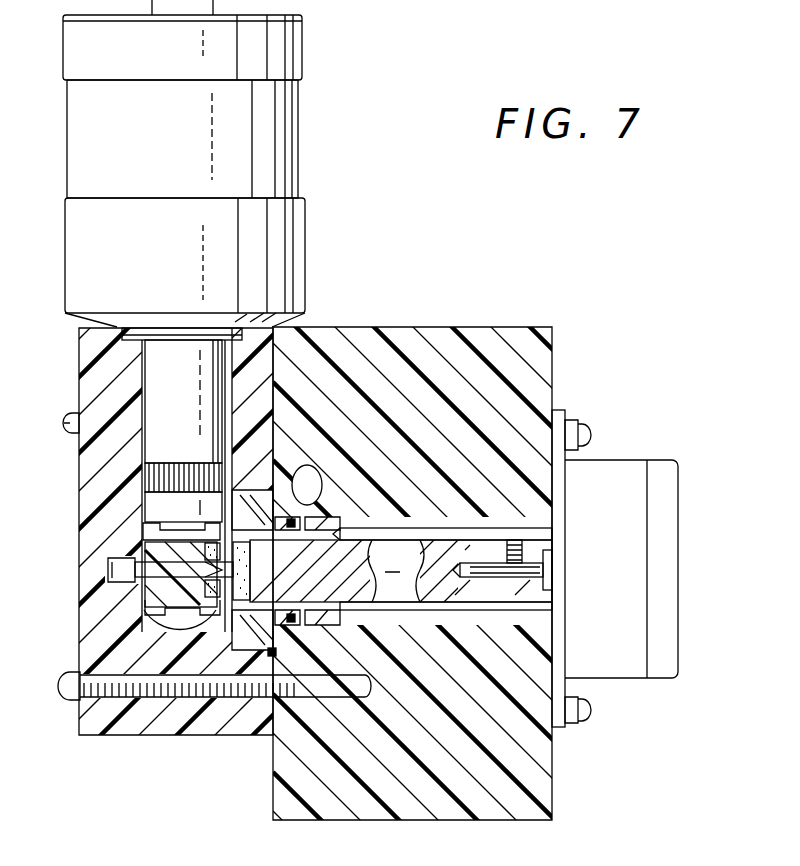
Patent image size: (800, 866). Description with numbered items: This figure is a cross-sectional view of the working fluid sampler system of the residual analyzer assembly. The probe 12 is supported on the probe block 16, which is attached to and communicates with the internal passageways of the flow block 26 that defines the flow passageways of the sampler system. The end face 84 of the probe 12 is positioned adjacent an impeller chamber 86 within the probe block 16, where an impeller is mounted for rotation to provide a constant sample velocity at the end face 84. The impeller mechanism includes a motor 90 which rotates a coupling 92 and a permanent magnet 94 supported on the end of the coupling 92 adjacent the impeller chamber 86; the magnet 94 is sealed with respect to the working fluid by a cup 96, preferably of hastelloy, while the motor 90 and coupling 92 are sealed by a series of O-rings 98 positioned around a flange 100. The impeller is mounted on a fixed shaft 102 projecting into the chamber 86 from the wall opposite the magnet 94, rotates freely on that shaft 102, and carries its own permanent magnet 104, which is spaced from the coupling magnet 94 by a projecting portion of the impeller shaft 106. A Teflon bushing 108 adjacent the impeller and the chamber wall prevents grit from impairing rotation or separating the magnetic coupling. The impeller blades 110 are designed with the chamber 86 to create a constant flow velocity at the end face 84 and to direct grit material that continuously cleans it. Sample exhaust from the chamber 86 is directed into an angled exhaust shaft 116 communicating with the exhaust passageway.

The probe 12 is at (282, 131).
The probe block 16 is at (140, 715).
The flow block 26 is at (553, 327).
The end face 84 is at (152, 504).
The impeller chamber 86 is at (150, 626).
The motor 90 is at (668, 556).
The coupling 92 is at (355, 581).
The permanent magnet 94 is at (250, 555).
The cup 96 is at (237, 605).
The O-rings 98 is at (276, 653).
The flange 100 is at (344, 614).
The fixed shaft 102 is at (110, 586).
The permanent magnet 104 is at (182, 618).
The impeller shaft 106 is at (250, 582).
The bushing 108 is at (140, 548).
The impeller blades 110 is at (140, 610).
The angled exhaust shaft 116 is at (323, 488).